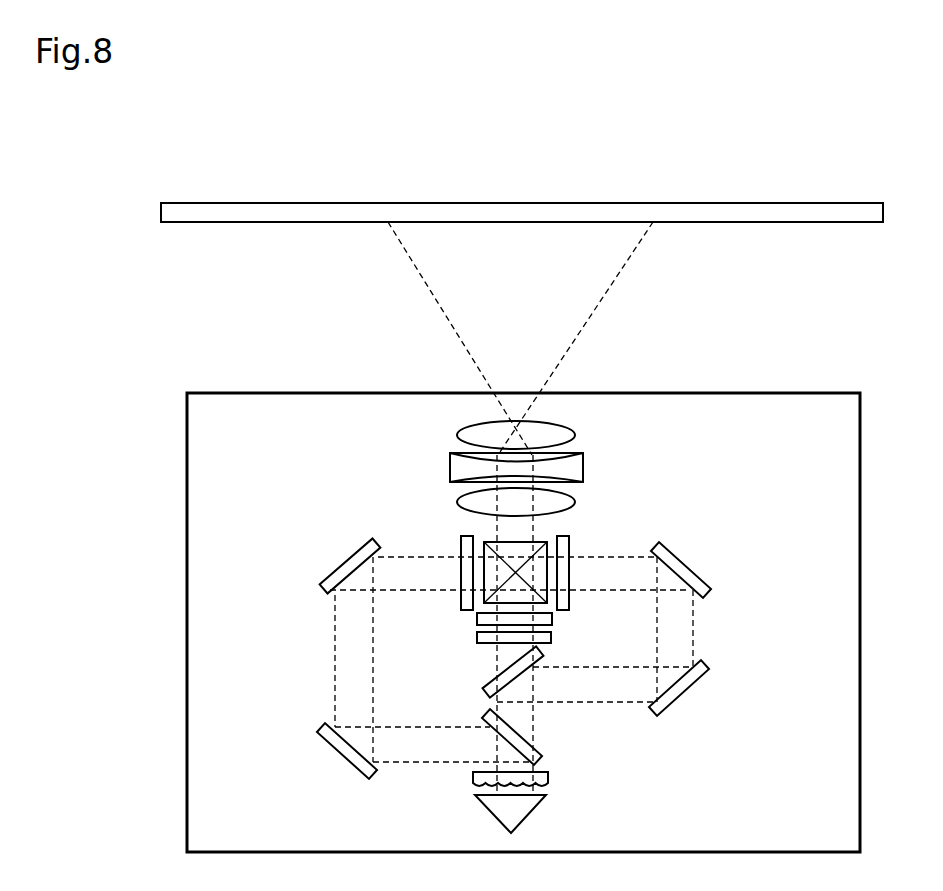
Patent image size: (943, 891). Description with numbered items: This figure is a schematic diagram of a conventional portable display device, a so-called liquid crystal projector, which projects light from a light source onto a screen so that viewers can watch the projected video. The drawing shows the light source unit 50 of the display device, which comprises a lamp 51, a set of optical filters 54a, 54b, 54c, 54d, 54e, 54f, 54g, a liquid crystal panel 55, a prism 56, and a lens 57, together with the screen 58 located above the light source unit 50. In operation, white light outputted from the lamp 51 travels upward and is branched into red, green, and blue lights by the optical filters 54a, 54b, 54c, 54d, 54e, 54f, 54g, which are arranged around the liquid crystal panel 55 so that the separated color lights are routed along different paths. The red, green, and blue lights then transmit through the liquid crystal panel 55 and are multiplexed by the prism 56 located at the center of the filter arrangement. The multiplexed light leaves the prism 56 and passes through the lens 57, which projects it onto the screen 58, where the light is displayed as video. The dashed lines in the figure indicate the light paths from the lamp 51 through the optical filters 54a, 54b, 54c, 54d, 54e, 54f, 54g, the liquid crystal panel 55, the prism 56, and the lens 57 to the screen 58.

The light source unit 50 is at (148, 392).
The lamp 51 is at (518, 808).
The optical filter 54a is at (540, 753).
The optical filter 54b is at (345, 748).
The optical filter 54c is at (517, 675).
The optical filter 54d is at (680, 688).
The optical filter 54e is at (347, 572).
The optical filter 54f is at (683, 572).
The optical filter 54g is at (542, 638).
The liquid crystal panel 55 is at (467, 603).
The prism 56 is at (538, 540).
The lens 57 is at (563, 433).
The screen 58 is at (847, 210).